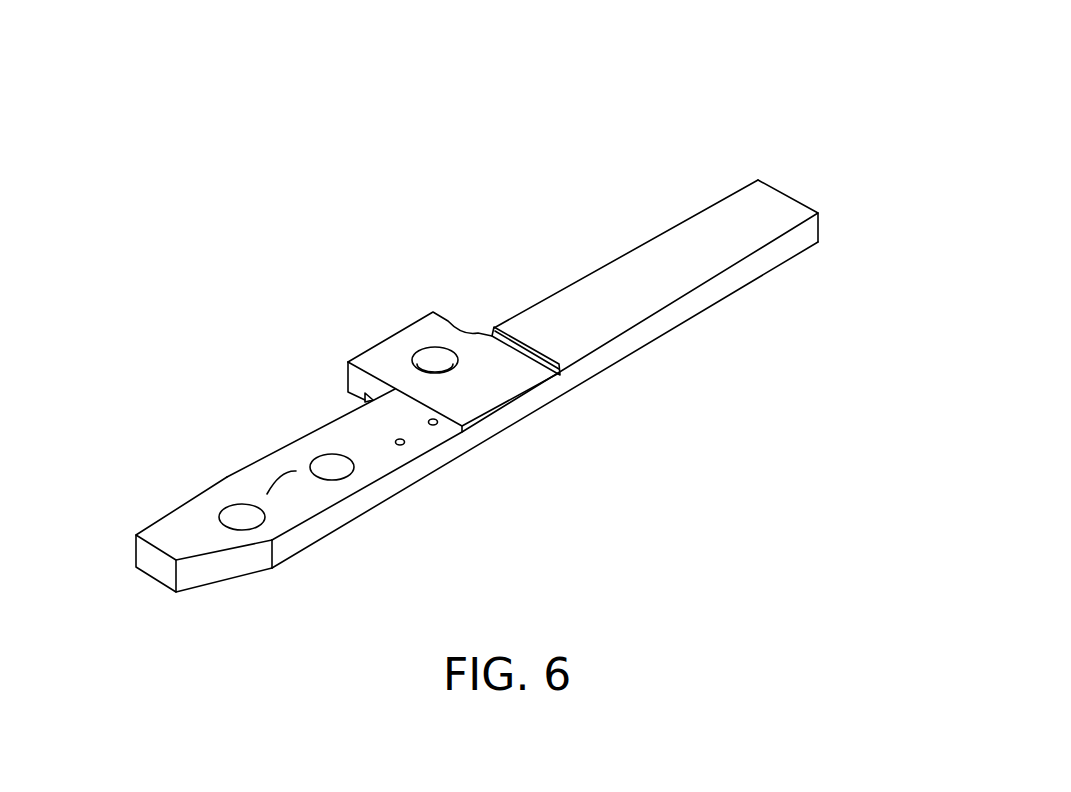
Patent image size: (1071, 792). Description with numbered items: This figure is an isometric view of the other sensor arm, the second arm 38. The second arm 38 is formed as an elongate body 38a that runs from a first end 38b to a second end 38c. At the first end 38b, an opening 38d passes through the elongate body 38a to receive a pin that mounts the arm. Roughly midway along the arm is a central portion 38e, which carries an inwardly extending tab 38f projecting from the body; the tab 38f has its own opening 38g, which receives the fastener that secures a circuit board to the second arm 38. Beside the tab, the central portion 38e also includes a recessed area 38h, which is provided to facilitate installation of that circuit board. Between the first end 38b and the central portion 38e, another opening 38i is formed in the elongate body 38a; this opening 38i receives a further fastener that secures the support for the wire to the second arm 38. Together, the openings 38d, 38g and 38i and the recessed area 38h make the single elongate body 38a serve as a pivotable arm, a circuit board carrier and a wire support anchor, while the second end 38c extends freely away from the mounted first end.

The second arm 38 is at (598, 156).
The elongate body 38a is at (296, 471).
The first end 38b is at (163, 533).
The second end 38c is at (773, 198).
The opening 38d is at (242, 513).
The central portion 38e is at (487, 398).
The inwardly extending tab 38f is at (446, 331).
The opening 38g is at (430, 357).
The recessed area 38h is at (559, 358).
The opening 38i is at (328, 462).